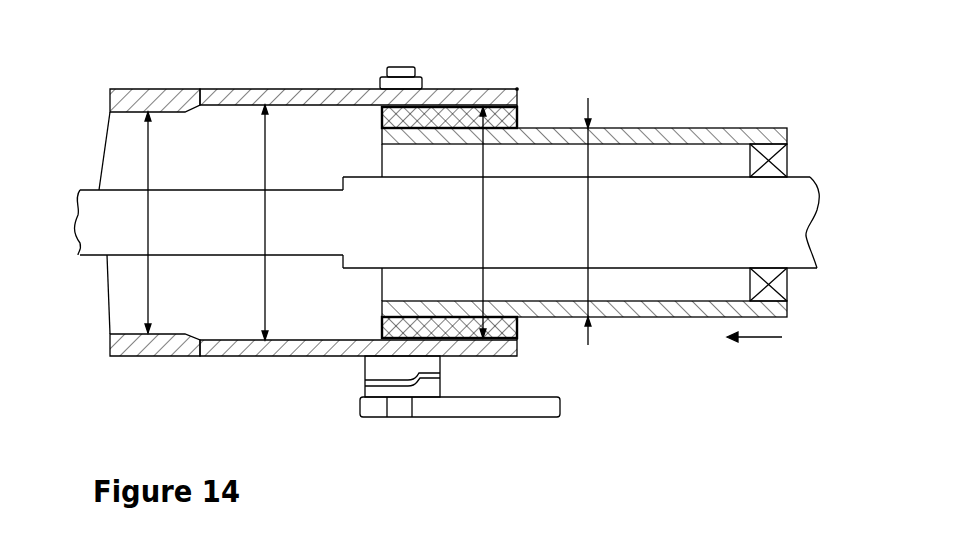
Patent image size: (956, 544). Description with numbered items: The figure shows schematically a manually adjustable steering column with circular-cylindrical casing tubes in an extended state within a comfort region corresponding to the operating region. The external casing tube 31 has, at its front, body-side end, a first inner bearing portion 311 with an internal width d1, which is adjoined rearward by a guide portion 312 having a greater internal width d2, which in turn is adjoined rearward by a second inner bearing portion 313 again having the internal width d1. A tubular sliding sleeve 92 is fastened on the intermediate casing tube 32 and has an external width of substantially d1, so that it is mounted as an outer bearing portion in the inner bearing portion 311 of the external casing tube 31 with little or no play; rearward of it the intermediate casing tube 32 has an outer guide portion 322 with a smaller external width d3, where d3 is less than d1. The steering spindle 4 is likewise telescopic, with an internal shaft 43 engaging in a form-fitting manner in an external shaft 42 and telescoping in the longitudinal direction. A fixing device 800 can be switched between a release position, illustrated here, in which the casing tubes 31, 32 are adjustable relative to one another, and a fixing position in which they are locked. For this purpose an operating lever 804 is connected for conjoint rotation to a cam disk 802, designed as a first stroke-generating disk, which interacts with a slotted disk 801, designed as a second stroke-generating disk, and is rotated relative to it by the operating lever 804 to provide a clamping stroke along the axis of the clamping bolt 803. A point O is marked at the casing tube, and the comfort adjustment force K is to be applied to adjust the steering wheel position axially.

The steering spindle 4 is at (449, 221).
The external shaft 42 is at (793, 240).
The internal shaft 43 is at (108, 223).
The external casing tube 31 is at (308, 197).
The first inner bearing portion 311 is at (143, 88).
The guide portion 312 is at (280, 88).
The second inner bearing portion 313 is at (438, 98).
The intermediate casing tube 32 is at (584, 200).
The outer guide portion 322 is at (663, 130).
The sliding sleeve 92 is at (424, 88).
The fixing device 800 is at (403, 248).
The slotted disk 801 is at (365, 368).
The cam disk 802 is at (365, 392).
The clamping bolt 803 is at (375, 417).
The operating lever 804 is at (487, 405).
The internal width d1 is at (143, 162).
The internal width of the guide portion d2 is at (262, 155).
The external width of the outer guide portion d3 is at (592, 105).
The reference point O is at (518, 88).
The comfort adjustment force K is at (753, 340).